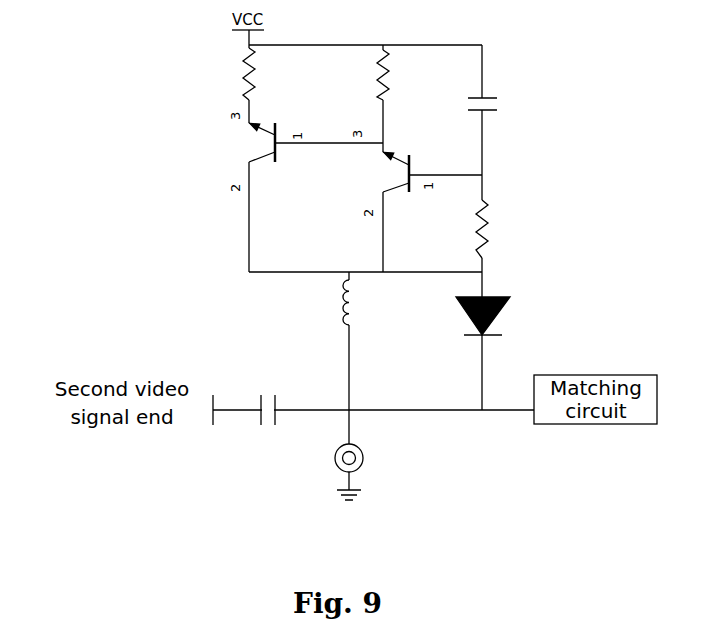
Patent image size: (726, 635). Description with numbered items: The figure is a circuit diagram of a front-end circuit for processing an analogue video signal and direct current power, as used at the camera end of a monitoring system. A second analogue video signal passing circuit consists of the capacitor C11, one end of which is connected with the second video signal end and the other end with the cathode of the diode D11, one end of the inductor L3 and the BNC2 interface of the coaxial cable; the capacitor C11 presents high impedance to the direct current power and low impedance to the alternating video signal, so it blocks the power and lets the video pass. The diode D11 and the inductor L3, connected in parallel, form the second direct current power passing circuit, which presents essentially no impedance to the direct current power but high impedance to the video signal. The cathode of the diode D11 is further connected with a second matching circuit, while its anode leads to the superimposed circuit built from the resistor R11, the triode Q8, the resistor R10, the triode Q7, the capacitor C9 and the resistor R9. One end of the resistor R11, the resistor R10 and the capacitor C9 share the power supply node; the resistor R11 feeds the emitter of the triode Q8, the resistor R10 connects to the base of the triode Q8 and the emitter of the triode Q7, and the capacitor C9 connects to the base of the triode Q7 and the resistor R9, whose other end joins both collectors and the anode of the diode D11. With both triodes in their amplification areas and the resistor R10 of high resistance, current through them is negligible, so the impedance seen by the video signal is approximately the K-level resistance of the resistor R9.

The resistor R11 is at (269, 74).
The resistor R10 is at (402, 75).
The capacitor C9 is at (496, 98).
The triode Q8 is at (248, 142).
The triode Q7 is at (378, 172).
The resistor R9 is at (505, 229).
The inductor L3 is at (360, 302).
The diode D11 is at (501, 316).
The capacitor C11 is at (267, 401).
The BNC2 interface BNC2 is at (378, 458).